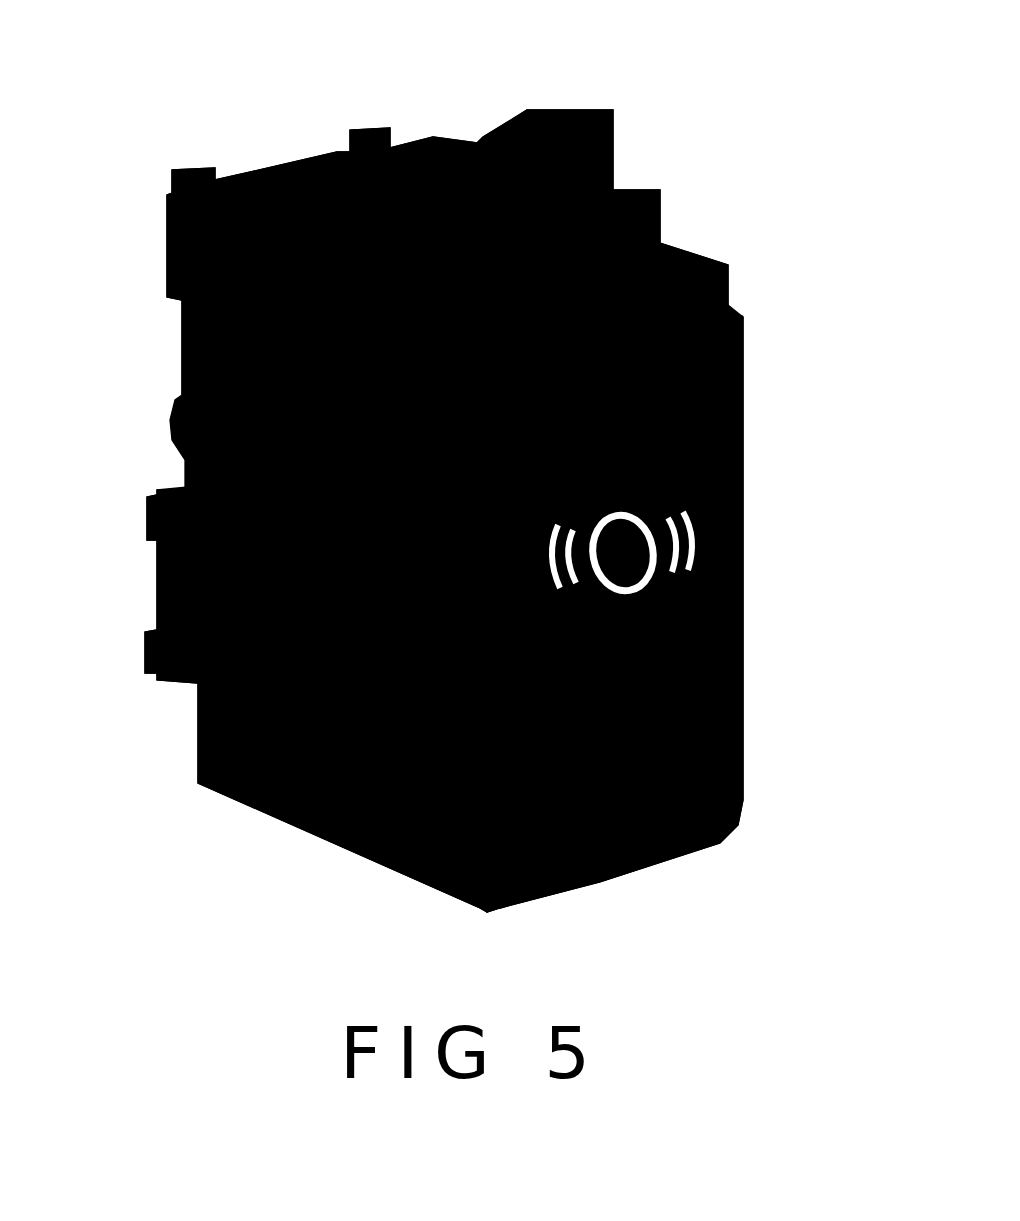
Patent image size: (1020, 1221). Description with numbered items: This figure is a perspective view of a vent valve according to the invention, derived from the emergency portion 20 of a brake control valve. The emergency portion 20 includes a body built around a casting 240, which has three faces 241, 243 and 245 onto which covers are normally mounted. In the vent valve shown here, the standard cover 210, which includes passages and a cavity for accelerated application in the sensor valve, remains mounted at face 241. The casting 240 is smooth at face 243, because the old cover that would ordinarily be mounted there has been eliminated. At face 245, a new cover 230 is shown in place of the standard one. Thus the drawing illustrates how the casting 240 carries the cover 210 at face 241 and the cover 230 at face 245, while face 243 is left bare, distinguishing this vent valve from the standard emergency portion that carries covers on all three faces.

The emergency portion 20 is at (761, 21).
The cover 210 is at (296, 129).
The cover 230 is at (158, 597).
The casting 240 is at (894, 314).
The face 241 is at (740, 303).
The face 243 is at (712, 574).
The face 245 is at (200, 783).